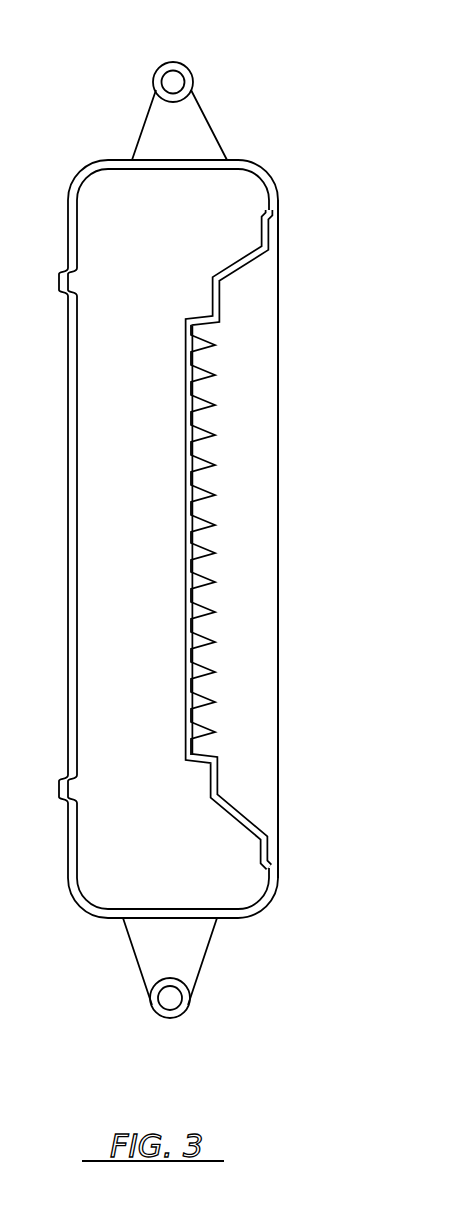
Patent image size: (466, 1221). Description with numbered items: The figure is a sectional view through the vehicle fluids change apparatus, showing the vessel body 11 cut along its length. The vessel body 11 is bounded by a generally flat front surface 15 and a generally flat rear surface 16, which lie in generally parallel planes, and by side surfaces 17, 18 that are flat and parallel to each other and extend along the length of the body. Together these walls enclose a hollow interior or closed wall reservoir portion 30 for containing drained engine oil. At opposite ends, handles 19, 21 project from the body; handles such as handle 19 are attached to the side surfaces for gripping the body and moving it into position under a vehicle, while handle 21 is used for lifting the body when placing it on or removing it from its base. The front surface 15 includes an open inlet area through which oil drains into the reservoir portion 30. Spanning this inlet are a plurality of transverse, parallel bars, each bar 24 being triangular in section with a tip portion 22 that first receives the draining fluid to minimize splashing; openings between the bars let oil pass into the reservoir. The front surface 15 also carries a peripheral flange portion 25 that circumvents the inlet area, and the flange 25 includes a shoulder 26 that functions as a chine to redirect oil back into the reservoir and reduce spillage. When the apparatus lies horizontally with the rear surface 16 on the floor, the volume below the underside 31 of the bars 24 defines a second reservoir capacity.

The vessel body 11 is at (68, 433).
The front surface 15 is at (282, 340).
The rear surface 16 is at (66, 329).
The side surface 17 is at (227, 921).
The side surface 18 is at (240, 158).
The handle 19 is at (177, 1017).
The handle 21 is at (177, 61).
The tip portion 22 is at (216, 467).
The bar 24 is at (214, 380).
The peripheral flange portion 25 is at (280, 201).
The shoulder 26 is at (222, 268).
The reservoir portion 30 is at (230, 192).
The underside of bars 31 is at (184, 452).